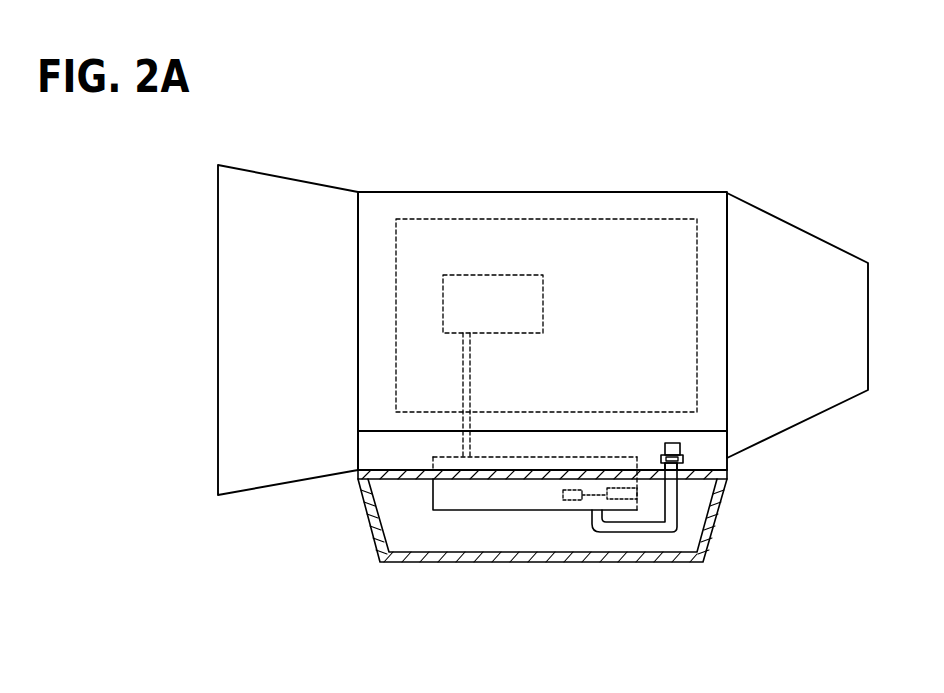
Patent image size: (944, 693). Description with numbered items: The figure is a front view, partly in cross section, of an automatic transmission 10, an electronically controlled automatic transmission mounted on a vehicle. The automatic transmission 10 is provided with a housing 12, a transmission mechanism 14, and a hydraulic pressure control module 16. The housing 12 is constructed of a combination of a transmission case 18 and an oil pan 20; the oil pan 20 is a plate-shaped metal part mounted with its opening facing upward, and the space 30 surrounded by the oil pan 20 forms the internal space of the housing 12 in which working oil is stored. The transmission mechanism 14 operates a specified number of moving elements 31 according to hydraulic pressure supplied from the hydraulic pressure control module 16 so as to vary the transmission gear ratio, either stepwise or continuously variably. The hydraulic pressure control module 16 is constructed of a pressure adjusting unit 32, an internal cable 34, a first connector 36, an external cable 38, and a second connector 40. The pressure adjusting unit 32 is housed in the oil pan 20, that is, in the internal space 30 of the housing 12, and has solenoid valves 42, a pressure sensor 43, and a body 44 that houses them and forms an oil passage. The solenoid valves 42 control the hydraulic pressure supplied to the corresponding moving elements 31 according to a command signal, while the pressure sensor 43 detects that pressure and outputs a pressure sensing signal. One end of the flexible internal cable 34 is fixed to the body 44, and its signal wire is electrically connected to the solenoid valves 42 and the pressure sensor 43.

The automatic transmission 10 is at (299, 165).
The housing 12 is at (598, 516).
The transmission mechanism 14 is at (515, 228).
The hydraulic pressure control module 16 is at (428, 518).
The transmission case 18 is at (728, 472).
The oil pan 20 is at (710, 522).
The space 30 is at (453, 540).
The moving elements 31 is at (466, 284).
The pressure adjusting unit 32 is at (543, 561).
The internal cable 34 is at (677, 533).
The first connector 36 is at (672, 443).
The external cable 38 is at (683, 453).
The second connector 40 is at (684, 463).
The solenoid valves 42 is at (638, 499).
The pressure sensor 43 is at (572, 500).
The body 44 is at (530, 505).